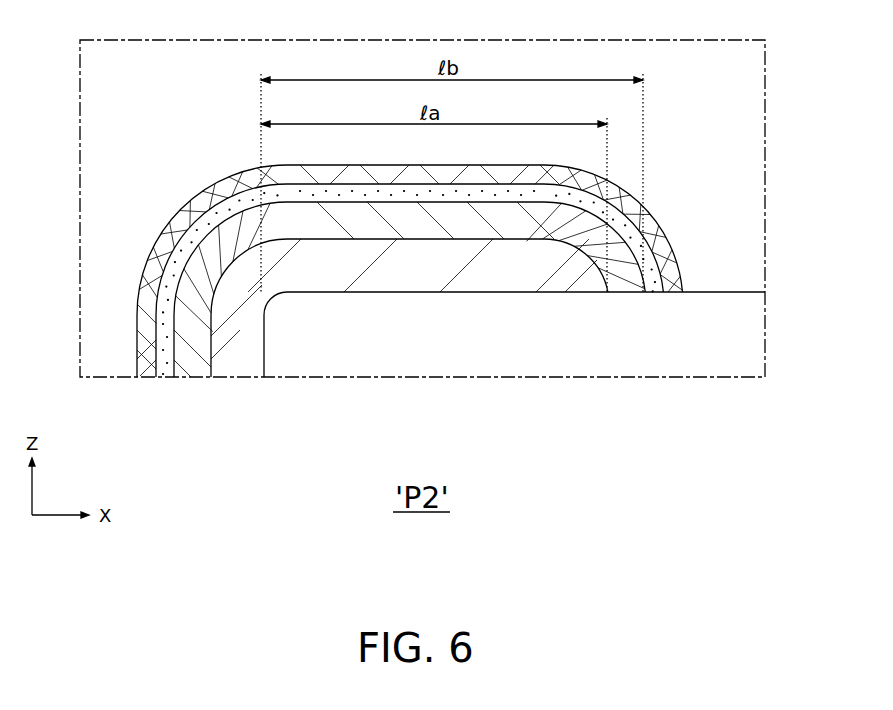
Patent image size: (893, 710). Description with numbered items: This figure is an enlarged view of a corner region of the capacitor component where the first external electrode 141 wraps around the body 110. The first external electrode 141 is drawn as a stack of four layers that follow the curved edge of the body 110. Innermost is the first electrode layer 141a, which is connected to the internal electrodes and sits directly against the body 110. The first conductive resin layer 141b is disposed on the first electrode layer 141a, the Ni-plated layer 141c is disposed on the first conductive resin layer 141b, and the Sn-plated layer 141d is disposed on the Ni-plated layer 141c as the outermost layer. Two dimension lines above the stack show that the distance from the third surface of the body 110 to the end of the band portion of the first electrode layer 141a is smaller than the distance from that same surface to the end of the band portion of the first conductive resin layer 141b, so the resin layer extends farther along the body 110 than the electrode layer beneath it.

The body 110 is at (708, 287).
The first external electrode 141 is at (380, 326).
The first electrode layer 141a is at (409, 342).
The first conductive resin layer 141b is at (193, 378).
The Ni-plated layer 141c is at (165, 378).
The Sn-plated layer 141d is at (145, 378).